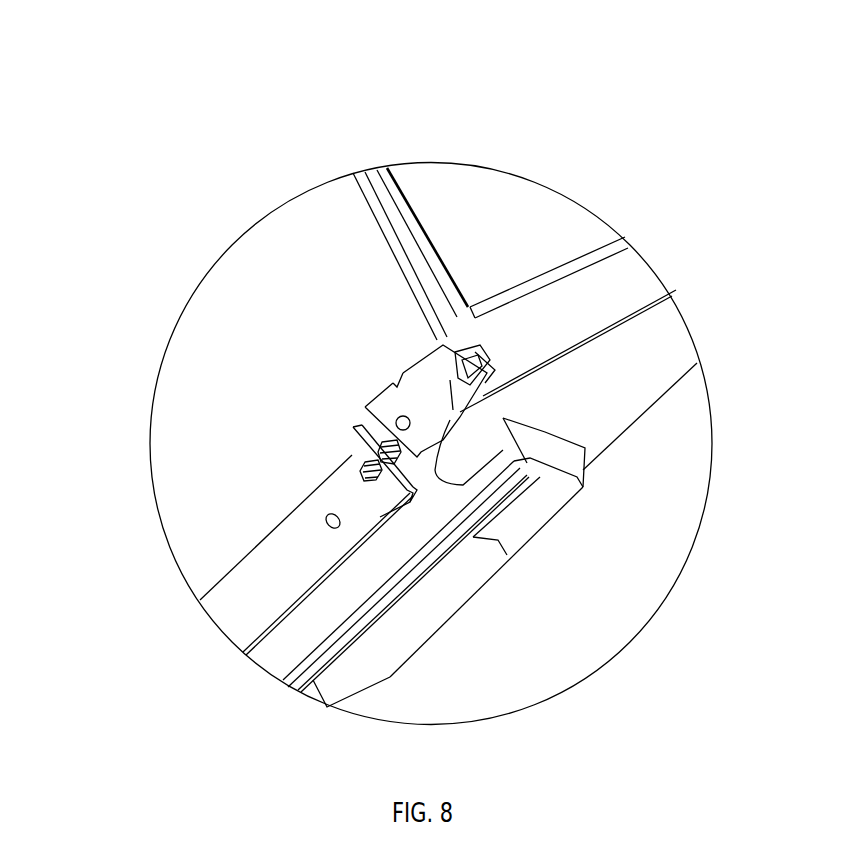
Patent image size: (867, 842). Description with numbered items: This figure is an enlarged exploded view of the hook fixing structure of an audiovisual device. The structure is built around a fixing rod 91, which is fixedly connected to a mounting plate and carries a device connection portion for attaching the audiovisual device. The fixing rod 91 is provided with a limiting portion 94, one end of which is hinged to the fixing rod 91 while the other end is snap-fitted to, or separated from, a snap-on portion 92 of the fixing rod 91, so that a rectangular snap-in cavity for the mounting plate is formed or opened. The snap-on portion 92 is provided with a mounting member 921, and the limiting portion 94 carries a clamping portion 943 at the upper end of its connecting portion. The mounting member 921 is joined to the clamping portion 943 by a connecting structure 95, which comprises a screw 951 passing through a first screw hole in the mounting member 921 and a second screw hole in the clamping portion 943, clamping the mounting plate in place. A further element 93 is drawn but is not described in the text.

The fixing rod 91 is at (637, 300).
The snap-on portion 92 is at (542, 388).
The mounting member 921 is at (410, 390).
The slide channel 93 is at (433, 505).
The limiting portion 94 is at (287, 562).
The clamping portion 943 is at (350, 500).
The connecting structure 95 is at (452, 372).
The screw 951 is at (468, 360).